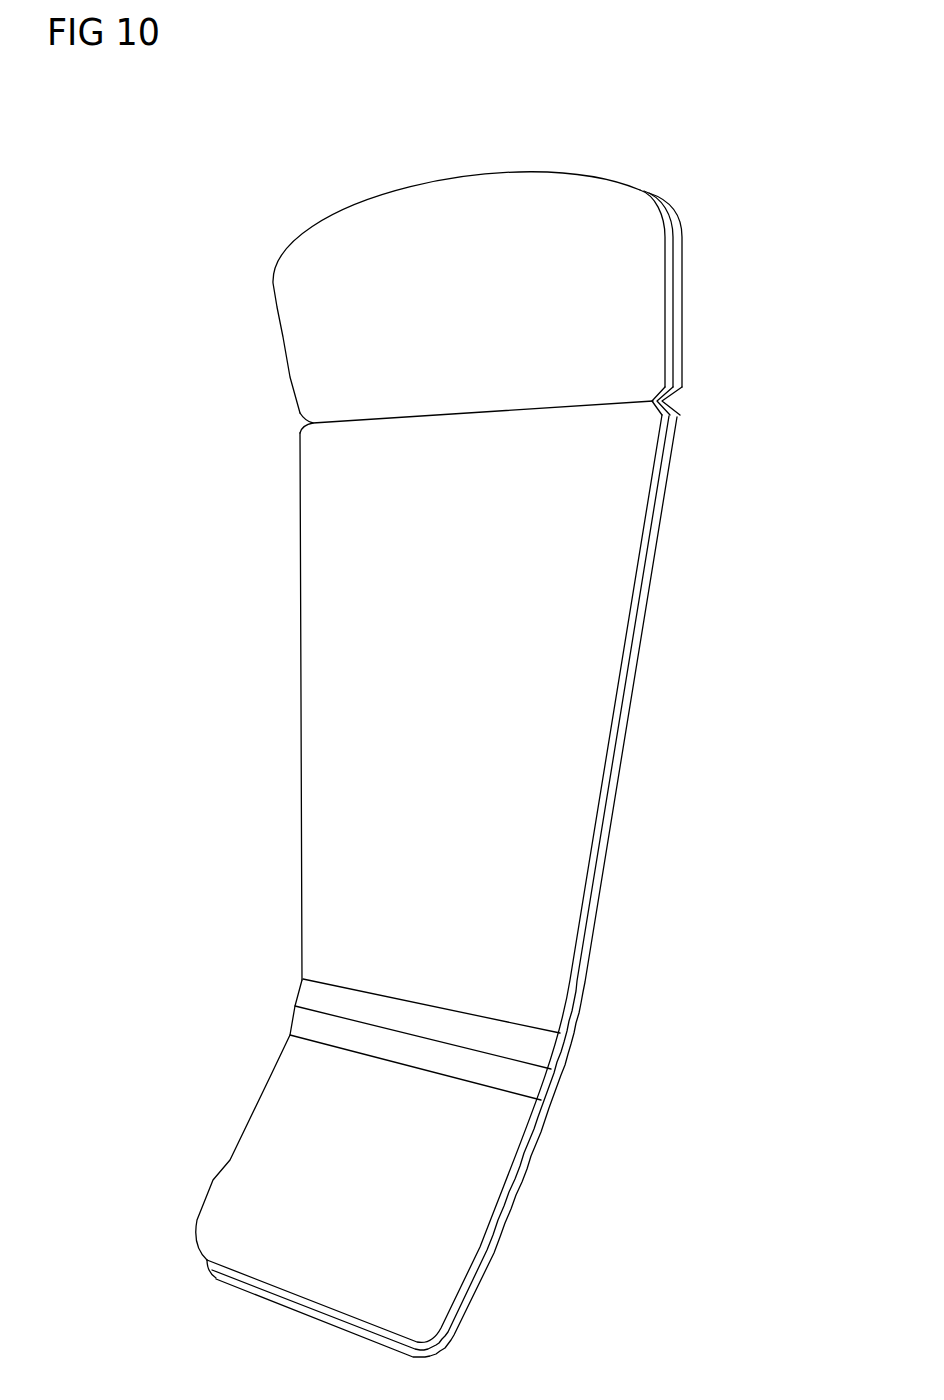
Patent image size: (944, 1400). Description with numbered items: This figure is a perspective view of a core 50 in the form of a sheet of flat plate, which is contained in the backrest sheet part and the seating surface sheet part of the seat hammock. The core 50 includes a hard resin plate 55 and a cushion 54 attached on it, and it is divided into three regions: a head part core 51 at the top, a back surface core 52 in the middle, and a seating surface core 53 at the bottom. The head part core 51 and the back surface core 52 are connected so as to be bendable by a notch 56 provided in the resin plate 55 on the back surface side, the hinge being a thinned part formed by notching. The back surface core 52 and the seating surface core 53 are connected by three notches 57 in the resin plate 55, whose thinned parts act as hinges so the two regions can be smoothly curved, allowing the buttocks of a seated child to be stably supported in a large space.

The core 50 is at (148, 511).
The head part core 51 is at (340, 350).
The back surface core 52 is at (340, 690).
The seating surface core 53 is at (281, 1079).
The cushion 54 is at (655, 467).
The resin plate 55 is at (657, 567).
The notch 56 is at (677, 403).
The notches 57 is at (566, 1035).